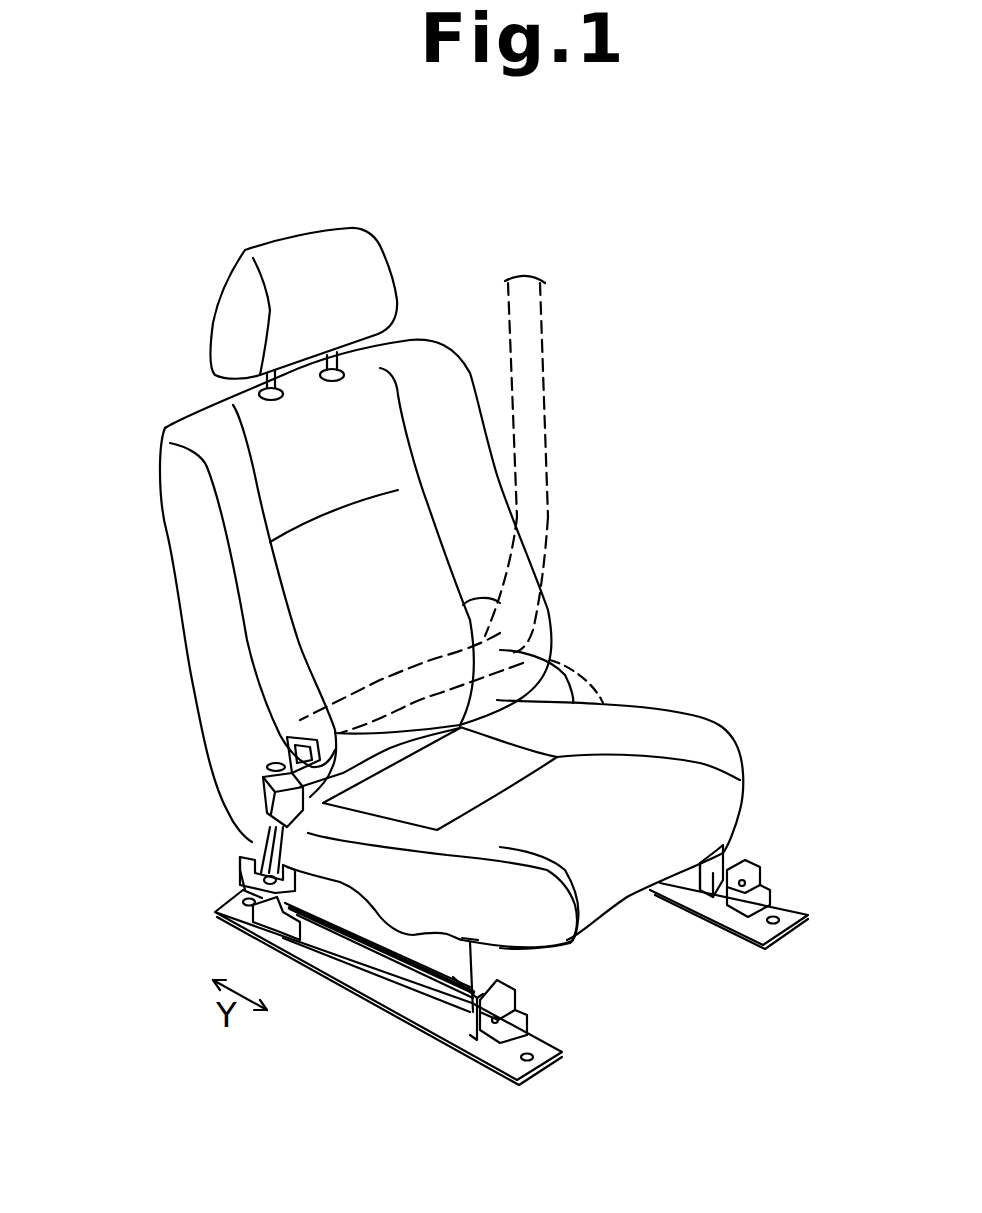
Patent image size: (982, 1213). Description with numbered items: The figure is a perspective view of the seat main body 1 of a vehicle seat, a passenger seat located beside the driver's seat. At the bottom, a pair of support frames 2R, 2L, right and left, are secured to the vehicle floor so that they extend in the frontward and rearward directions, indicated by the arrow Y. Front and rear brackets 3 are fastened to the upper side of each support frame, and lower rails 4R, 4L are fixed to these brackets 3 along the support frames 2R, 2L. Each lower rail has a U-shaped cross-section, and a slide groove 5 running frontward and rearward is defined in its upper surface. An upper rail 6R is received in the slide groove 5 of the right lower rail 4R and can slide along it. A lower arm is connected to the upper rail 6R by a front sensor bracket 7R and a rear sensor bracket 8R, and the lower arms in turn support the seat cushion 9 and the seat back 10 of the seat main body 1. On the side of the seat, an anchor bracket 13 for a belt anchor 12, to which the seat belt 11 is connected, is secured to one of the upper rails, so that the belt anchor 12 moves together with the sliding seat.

The seat main body 1 is at (654, 422).
The right support frame 2R is at (480, 1045).
The left support frame 2L is at (767, 930).
The bracket 3 is at (250, 930).
The right lower rail 4R is at (393, 972).
The left lower rail 4L is at (713, 865).
The slide groove 5 is at (485, 982).
The right upper rail 6R is at (353, 923).
The front sensor bracket 7R is at (473, 940).
The rear sensor bracket 8R is at (283, 870).
The seat cushion 9 is at (710, 738).
The seat back 10 is at (182, 512).
The seat belt 11 is at (462, 603).
The belt anchor 12 is at (263, 777).
The anchor bracket 13 is at (300, 832).